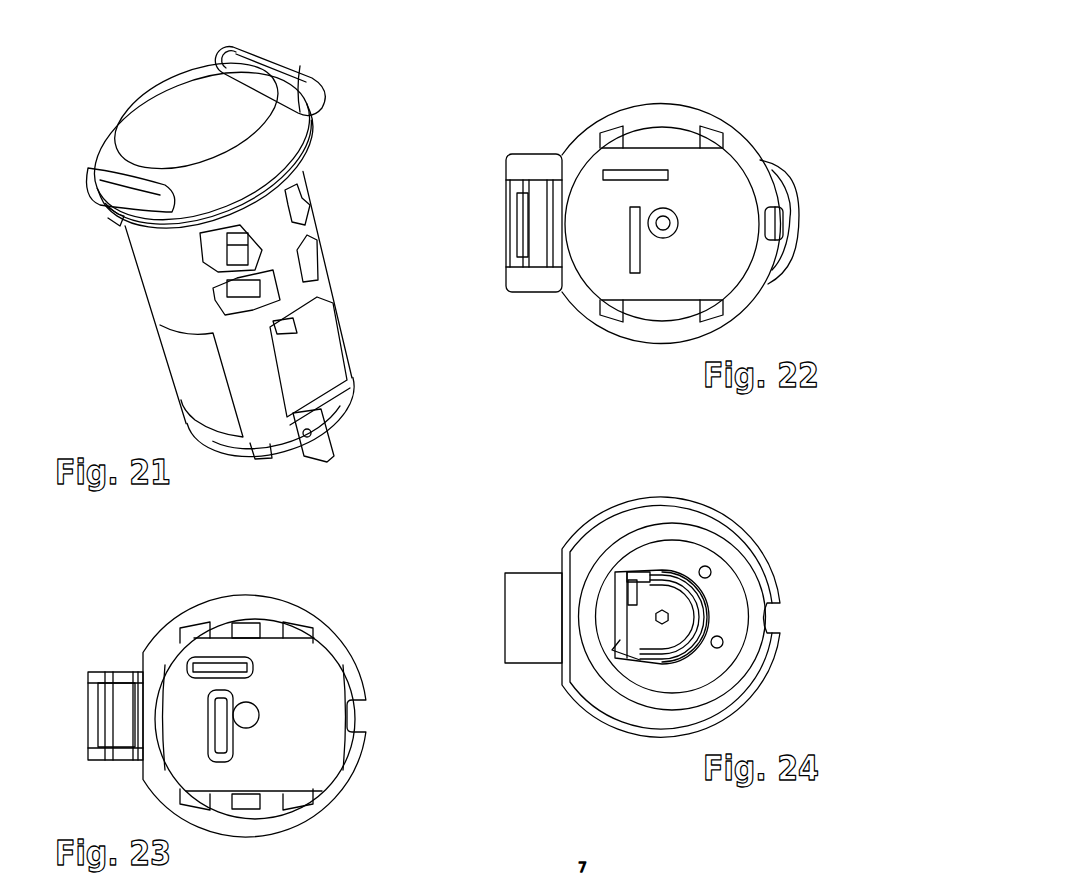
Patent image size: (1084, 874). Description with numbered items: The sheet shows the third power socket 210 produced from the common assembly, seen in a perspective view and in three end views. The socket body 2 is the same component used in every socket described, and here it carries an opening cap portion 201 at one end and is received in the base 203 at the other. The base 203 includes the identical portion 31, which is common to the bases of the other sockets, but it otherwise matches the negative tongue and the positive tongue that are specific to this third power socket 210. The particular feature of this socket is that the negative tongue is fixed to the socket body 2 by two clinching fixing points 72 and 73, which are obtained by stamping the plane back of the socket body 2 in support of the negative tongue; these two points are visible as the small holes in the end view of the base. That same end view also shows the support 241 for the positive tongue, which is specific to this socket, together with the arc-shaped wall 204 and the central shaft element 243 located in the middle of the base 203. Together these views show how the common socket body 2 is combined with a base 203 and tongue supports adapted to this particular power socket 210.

In FIG. 21, the third power socket 210 is at (160, 44).
In FIG. 21, the button cap / clip portion 201 is at (143, 125).
In FIG. 22, the button cap / clip portion 201 is at (540, 165).
In FIG. 21, the base 203 is at (325, 243).
In FIG. 22, the base 203 is at (680, 115).
In FIG. 23, the base 203 is at (177, 670).
In FIG. 21, the socket body 2 is at (307, 358).
In FIG. 23, the identical portion 31 is at (343, 637).
In FIG. 24, the fixing point 73 is at (708, 568).
In FIG. 24, the fixing point 72 is at (723, 642).
In FIG. 24, the support 241 is at (685, 606).
In FIG. 24, the arc wall 204 is at (694, 644).
In FIG. 24, the hexagonal shaft 243 is at (661, 625).